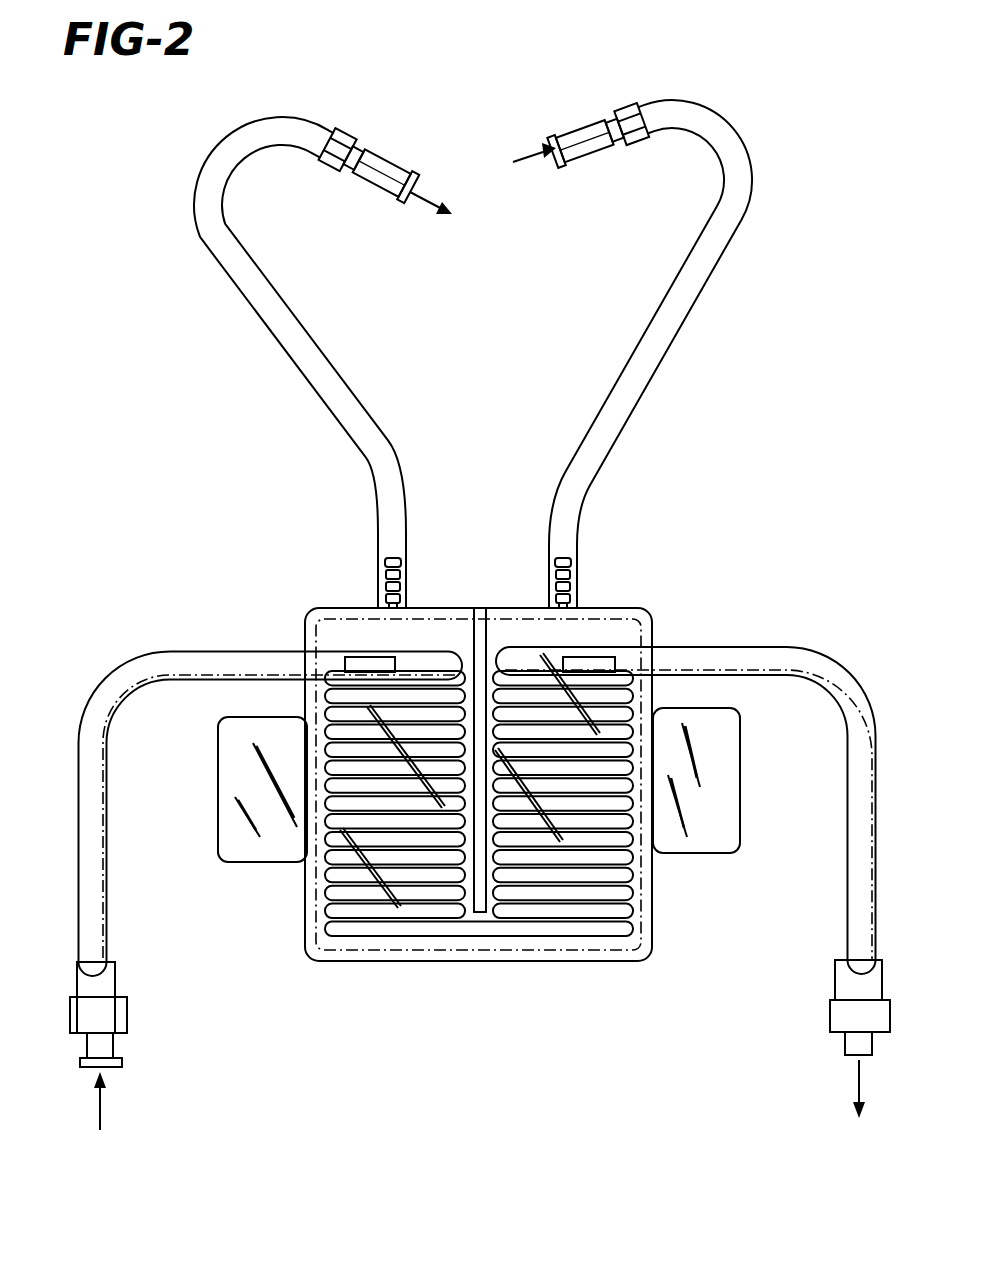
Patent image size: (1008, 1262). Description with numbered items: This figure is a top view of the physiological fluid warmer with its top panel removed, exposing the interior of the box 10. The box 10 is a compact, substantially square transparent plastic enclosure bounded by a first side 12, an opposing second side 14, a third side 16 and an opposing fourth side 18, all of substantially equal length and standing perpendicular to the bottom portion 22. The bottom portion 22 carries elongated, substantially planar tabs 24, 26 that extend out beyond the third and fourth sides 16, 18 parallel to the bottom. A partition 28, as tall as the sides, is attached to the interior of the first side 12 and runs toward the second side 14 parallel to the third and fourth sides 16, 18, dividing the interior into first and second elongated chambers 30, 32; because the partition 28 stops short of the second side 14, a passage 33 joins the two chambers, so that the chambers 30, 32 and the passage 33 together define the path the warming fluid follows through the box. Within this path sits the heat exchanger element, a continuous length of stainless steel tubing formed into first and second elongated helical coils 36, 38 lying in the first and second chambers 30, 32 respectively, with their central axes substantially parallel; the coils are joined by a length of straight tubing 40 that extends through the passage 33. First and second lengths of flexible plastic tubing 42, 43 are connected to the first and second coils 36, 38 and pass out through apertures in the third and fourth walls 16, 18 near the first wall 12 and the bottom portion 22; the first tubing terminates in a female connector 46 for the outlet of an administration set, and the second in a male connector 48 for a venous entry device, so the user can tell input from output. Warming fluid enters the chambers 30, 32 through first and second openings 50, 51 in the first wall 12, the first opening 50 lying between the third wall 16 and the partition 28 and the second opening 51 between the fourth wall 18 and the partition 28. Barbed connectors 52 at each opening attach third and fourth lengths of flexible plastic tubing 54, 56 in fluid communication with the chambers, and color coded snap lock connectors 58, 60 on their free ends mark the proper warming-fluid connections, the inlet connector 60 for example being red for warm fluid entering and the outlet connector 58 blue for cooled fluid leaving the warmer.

The box 10 is at (474, 797).
The first side 12 is at (340, 607).
The second side 14 is at (432, 962).
The third side 16 is at (302, 700).
The fourth side 18 is at (655, 925).
The bottom portion 22 is at (608, 942).
The tab 24 is at (225, 808).
The tab 26 is at (725, 793).
The partition 28 is at (481, 626).
The first chamber 30 is at (305, 940).
The second chamber 32 is at (637, 862).
The passage 33 is at (468, 940).
The first helical coil 36 is at (315, 888).
The second helical coil 38 is at (650, 878).
The straight tubing 40 is at (507, 926).
The first length of flexible plastic tubing 42 is at (265, 665).
The second length of flexible plastic tubing 43 is at (843, 700).
The female connector 46 is at (115, 1015).
The male connector 48 is at (838, 998).
The first opening 50 is at (392, 612).
The second opening 51 is at (571, 612).
The barbed connectors 52 is at (555, 575).
The third length of flexible plastic tubing 54 is at (360, 452).
The fourth length of flexible plastic tubing 56 is at (660, 348).
The outlet connector 58 is at (381, 198).
The inlet connector 60 is at (597, 148).